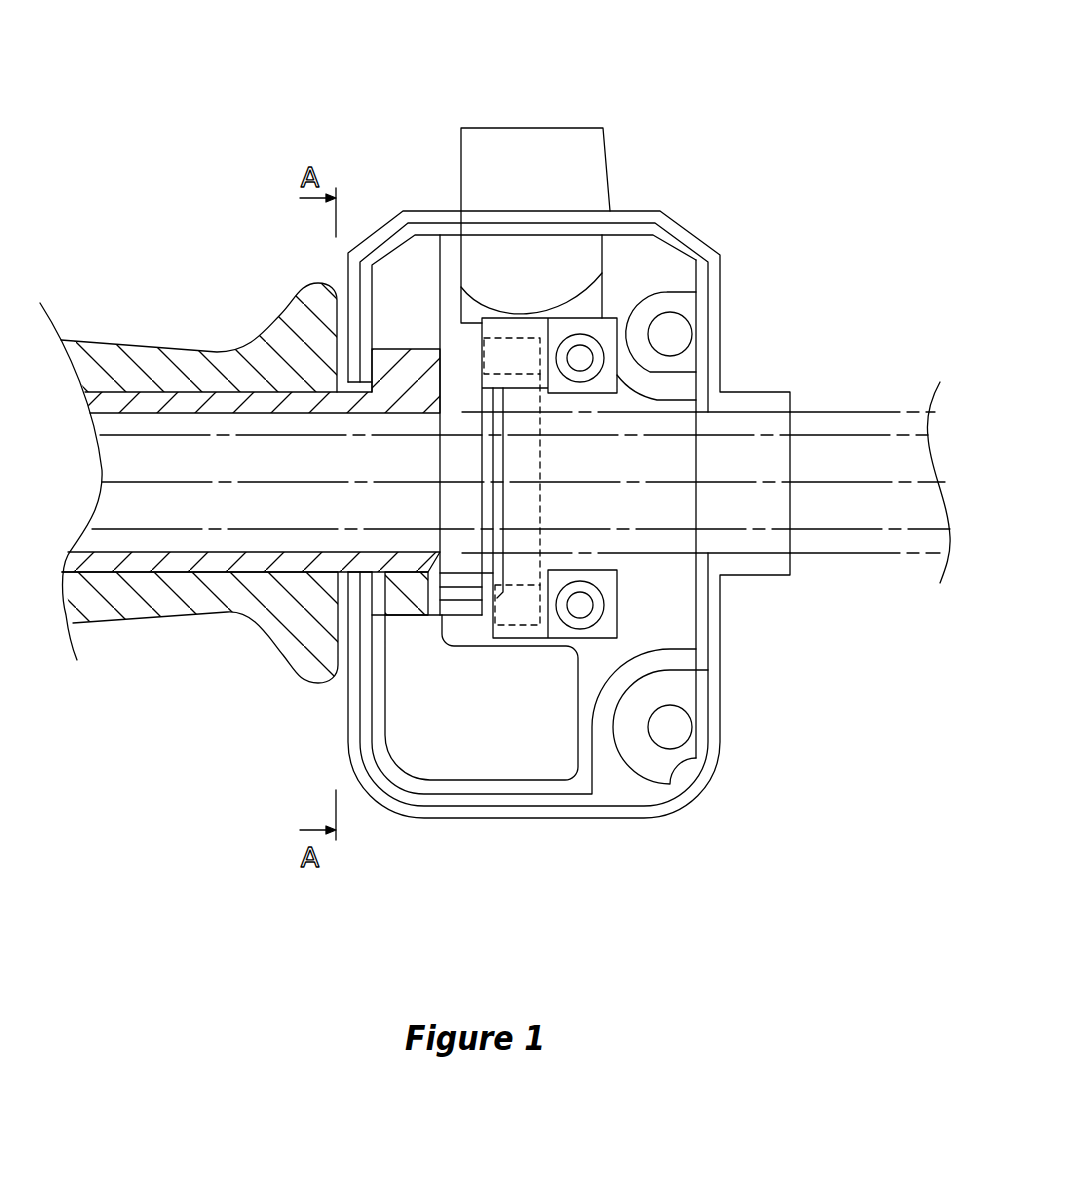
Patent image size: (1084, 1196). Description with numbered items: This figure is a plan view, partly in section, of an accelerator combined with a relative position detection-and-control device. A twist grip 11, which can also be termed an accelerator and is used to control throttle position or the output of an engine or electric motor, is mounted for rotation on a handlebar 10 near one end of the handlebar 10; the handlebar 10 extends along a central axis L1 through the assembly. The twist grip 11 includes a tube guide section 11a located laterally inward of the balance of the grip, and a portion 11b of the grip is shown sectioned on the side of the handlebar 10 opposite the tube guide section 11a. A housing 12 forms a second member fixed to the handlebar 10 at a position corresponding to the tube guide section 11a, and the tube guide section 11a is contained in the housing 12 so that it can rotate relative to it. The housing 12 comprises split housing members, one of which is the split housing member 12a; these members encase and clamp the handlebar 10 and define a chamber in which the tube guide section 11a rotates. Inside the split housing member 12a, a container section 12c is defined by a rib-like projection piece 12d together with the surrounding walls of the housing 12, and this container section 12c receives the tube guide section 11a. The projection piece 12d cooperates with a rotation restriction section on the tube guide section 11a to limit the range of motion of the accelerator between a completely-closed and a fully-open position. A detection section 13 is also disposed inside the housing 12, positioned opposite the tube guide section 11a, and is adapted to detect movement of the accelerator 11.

The handlebar 10 is at (832, 412).
The axis of shaft L1 is at (887, 480).
The twist grip 11 is at (173, 351).
The tube guide section 11a is at (415, 347).
The tube lower wall 11b is at (183, 617).
The housing 12 is at (686, 228).
The split housing member 12a is at (722, 655).
The container section 12c is at (427, 250).
The rib-like projection piece 12d is at (472, 337).
The detection section 13 is at (513, 782).